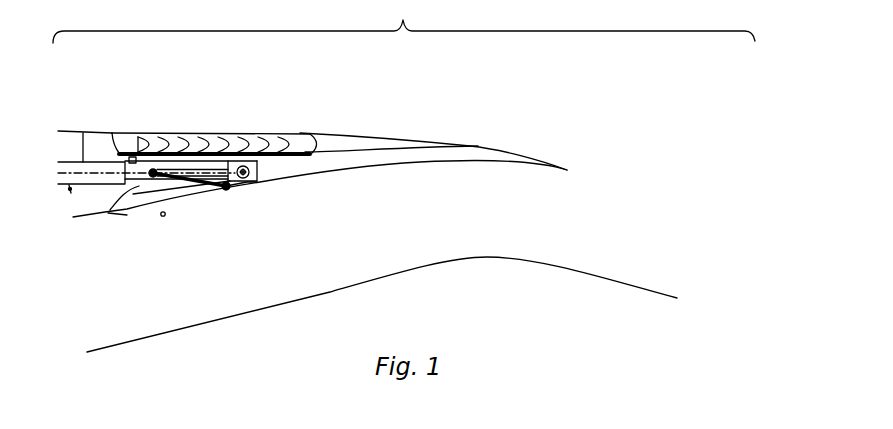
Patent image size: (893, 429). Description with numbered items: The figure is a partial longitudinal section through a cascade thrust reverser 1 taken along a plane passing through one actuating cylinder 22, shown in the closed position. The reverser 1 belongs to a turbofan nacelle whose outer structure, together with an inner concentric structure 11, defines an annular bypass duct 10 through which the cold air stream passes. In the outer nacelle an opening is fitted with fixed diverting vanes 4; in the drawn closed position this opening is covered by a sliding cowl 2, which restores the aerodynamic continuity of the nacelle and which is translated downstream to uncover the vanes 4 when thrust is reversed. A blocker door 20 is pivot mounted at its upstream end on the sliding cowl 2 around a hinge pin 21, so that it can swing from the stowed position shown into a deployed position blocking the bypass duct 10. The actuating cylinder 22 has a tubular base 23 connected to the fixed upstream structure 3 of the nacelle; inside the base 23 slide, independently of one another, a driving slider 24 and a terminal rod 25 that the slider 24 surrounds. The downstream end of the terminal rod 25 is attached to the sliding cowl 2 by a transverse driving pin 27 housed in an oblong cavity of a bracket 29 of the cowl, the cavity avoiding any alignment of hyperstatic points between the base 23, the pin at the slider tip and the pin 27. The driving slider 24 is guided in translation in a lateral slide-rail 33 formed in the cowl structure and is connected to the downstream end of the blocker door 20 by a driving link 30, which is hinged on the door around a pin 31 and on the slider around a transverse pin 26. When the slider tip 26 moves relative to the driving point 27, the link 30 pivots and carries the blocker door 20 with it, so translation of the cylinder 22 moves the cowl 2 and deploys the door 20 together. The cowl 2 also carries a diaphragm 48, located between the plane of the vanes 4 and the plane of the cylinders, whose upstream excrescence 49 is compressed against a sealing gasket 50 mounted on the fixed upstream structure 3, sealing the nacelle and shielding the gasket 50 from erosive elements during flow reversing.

The thrust reverser 1 is at (404, 21).
The sliding cowl 2 is at (461, 147).
The fixed upstream structure 3 is at (74, 142).
The diverting vanes 4 is at (266, 140).
The annular bypass duct 10 is at (391, 181).
The inner concentric structure 11 is at (613, 280).
The blocker door 20 is at (180, 193).
The hinge pin 21 is at (163, 217).
The actuating cylinder 22 is at (70, 190).
The tubular base 23 is at (84, 173).
The driving slider 24 is at (153, 170).
The terminal rod 25 is at (238, 136).
The transverse pin 26 is at (139, 188).
The transverse driving pin 27 is at (299, 134).
The bracket 29 is at (258, 182).
The driving link 30 is at (202, 188).
The pin 31 is at (228, 188).
The lateral slide-rail 33 is at (216, 168).
The diaphragm 48 is at (183, 152).
The excrescence 49 is at (133, 157).
The sealing gasket 50 is at (122, 132).